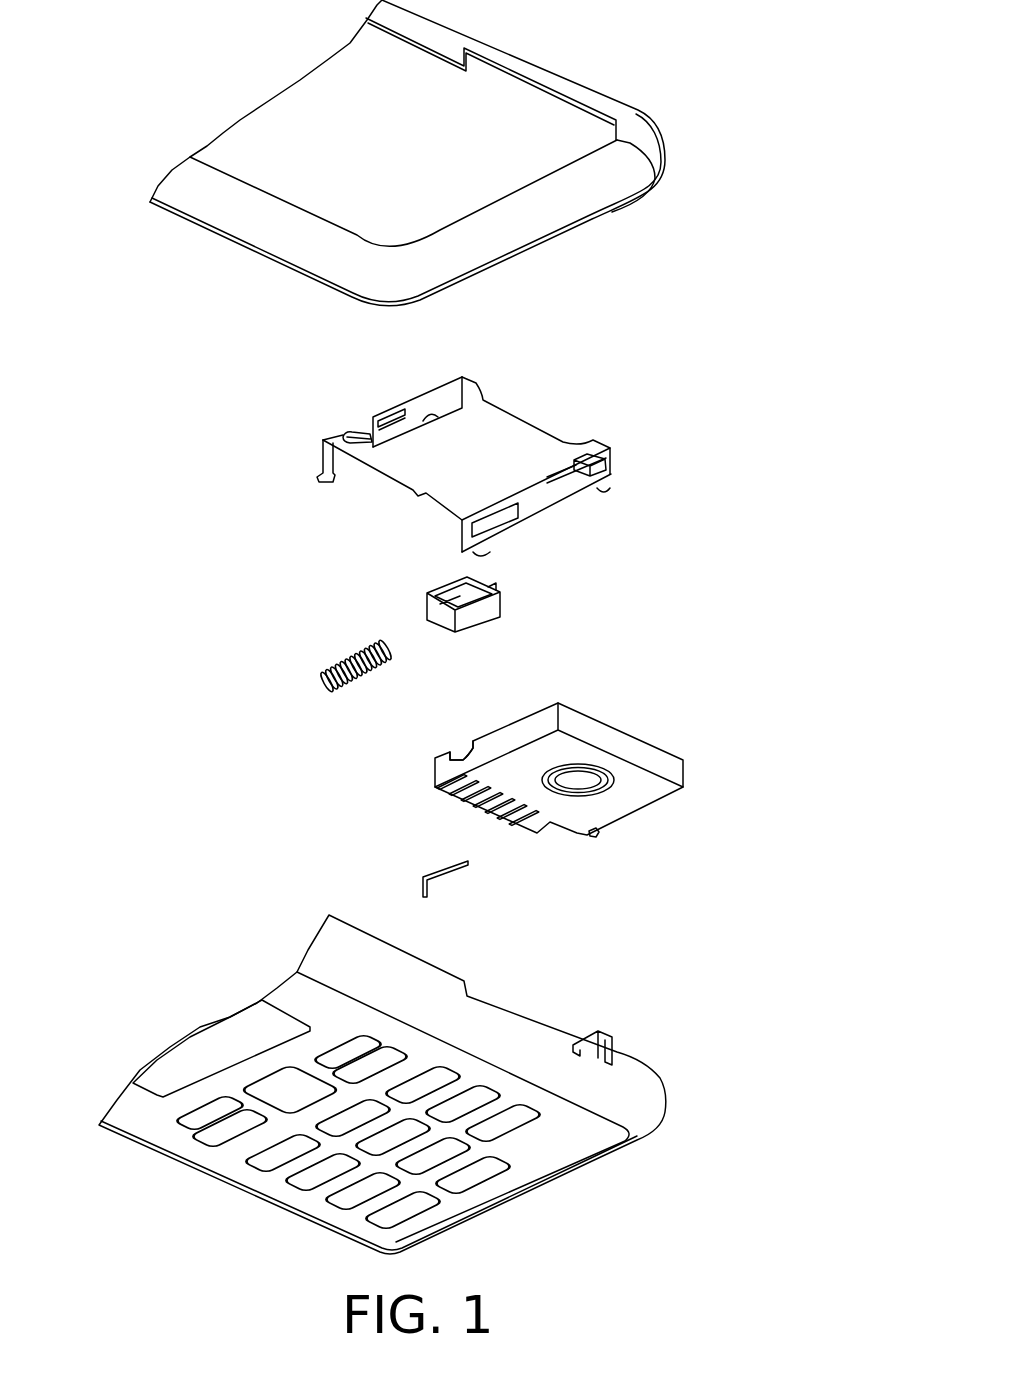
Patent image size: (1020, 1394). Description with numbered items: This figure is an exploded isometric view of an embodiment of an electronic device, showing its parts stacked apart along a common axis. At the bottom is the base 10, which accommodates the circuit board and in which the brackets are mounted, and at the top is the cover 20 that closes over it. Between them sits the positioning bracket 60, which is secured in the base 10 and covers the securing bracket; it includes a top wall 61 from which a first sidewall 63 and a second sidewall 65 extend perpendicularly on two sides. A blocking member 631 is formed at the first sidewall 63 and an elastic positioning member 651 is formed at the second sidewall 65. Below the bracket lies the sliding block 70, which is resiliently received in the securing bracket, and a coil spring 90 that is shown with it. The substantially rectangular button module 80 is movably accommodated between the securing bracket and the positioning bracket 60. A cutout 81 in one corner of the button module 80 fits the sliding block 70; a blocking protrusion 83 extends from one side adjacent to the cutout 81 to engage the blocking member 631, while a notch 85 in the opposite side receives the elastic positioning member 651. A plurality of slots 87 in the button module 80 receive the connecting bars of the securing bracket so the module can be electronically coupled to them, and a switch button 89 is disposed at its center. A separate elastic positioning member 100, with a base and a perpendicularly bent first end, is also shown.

The base 10 is at (659, 1048).
The cover 20 is at (612, 80).
The positioning bracket 60 is at (466, 443).
The top wall 61 is at (440, 473).
The first sidewall 63 is at (533, 503).
The blocking member 631 is at (582, 460).
The second sidewall 65 is at (428, 402).
The elastic positioning member 651 is at (360, 435).
The sliding block 70 is at (516, 597).
The button module 80 is at (568, 795).
The cutout 81 is at (558, 840).
The blocking protrusion 83 is at (594, 836).
The notch 85 is at (460, 750).
The slots 87 is at (460, 800).
The switch button 89 is at (587, 780).
The coil spring 90 is at (337, 667).
The elastic positioning member 100 is at (435, 877).